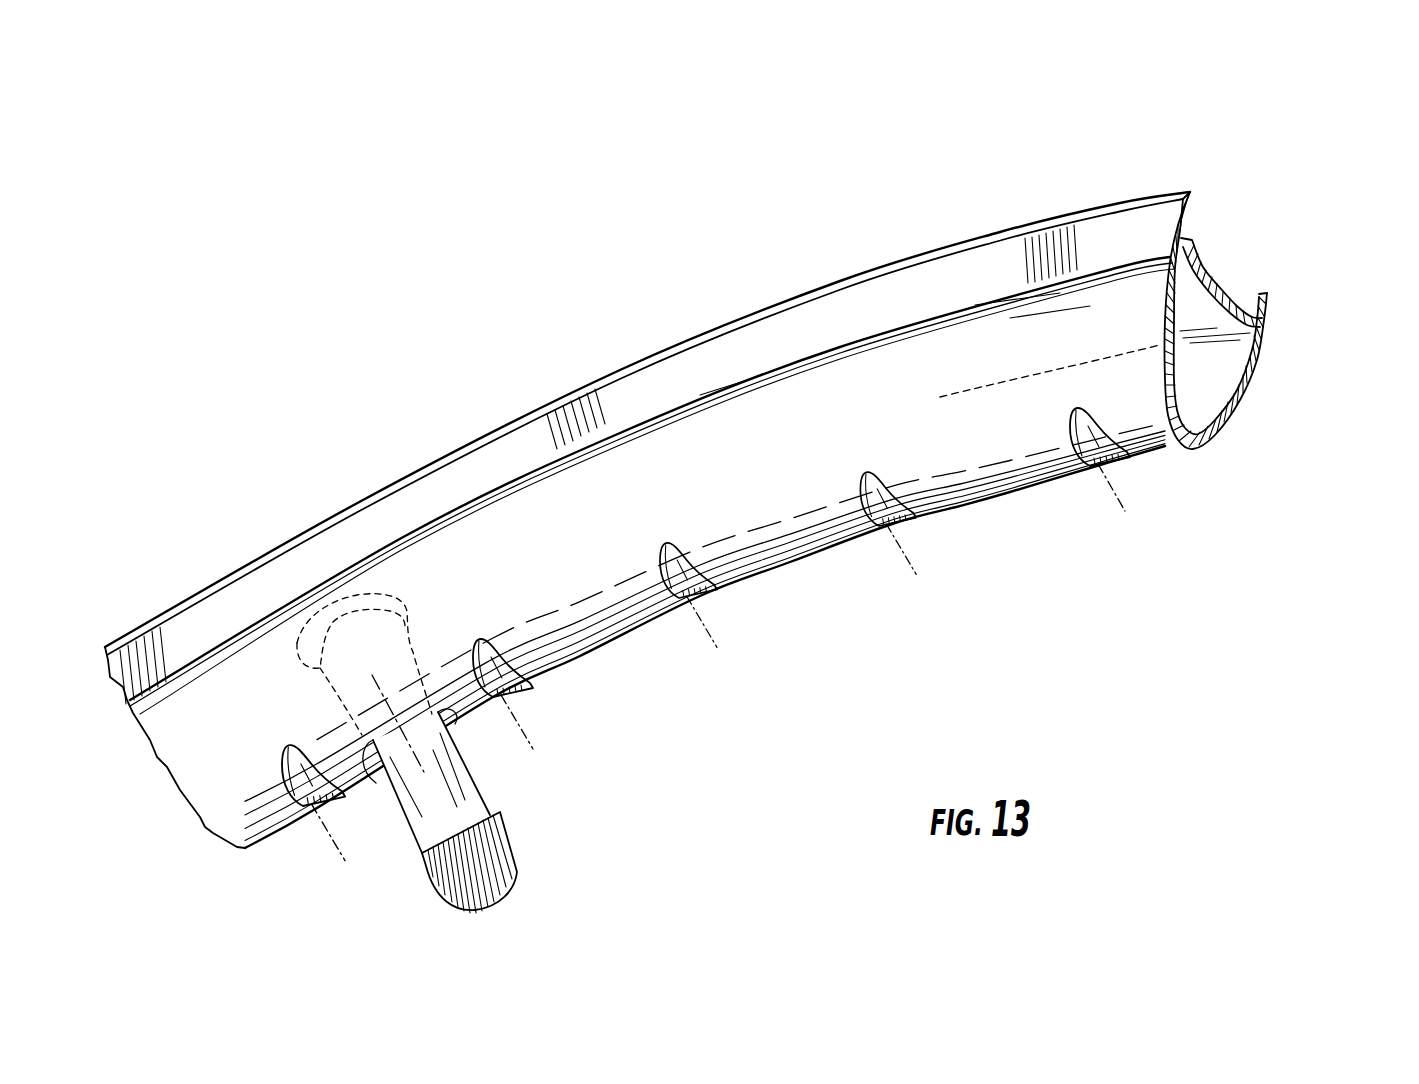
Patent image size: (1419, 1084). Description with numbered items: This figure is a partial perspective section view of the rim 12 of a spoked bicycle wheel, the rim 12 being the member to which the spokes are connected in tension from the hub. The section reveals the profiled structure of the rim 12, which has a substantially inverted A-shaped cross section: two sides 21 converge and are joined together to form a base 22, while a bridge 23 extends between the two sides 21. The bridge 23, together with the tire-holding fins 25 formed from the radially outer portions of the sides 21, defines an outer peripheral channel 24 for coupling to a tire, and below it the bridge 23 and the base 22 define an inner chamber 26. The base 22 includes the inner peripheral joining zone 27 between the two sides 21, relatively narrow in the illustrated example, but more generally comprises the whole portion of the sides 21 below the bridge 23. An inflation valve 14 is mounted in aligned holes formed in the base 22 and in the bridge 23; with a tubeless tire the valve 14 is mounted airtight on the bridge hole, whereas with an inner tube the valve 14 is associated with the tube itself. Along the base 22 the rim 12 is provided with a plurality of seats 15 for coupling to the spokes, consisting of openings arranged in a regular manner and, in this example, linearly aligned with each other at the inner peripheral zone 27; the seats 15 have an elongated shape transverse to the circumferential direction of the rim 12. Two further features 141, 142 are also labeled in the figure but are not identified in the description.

The rim 12 is at (728, 316).
The valve 14 is at (453, 787).
The valve stem base collar 141 is at (370, 787).
The valve hole 142 is at (297, 645).
The seats 15 is at (303, 810).
The sides 21 is at (1147, 373).
The base 22 is at (1177, 451).
The bridge 23 is at (1220, 282).
The outer peripheral channel 24 is at (1225, 247).
The tire-holding fins 25 is at (1190, 190).
The inner chamber 26 is at (1227, 355).
The inner peripheral joining zone 27 is at (1013, 493).